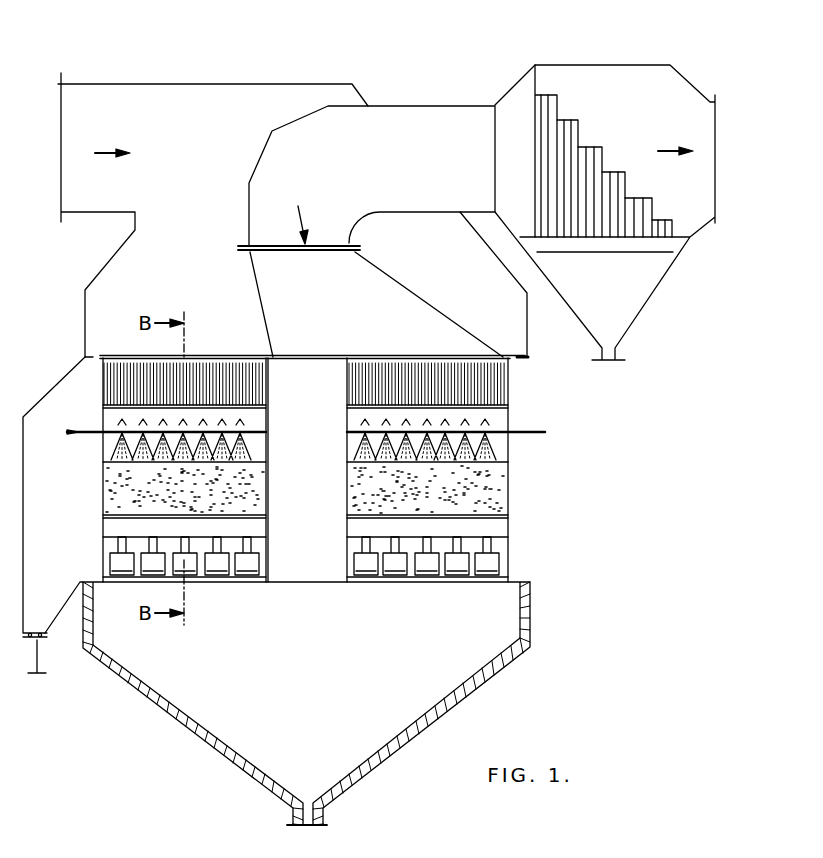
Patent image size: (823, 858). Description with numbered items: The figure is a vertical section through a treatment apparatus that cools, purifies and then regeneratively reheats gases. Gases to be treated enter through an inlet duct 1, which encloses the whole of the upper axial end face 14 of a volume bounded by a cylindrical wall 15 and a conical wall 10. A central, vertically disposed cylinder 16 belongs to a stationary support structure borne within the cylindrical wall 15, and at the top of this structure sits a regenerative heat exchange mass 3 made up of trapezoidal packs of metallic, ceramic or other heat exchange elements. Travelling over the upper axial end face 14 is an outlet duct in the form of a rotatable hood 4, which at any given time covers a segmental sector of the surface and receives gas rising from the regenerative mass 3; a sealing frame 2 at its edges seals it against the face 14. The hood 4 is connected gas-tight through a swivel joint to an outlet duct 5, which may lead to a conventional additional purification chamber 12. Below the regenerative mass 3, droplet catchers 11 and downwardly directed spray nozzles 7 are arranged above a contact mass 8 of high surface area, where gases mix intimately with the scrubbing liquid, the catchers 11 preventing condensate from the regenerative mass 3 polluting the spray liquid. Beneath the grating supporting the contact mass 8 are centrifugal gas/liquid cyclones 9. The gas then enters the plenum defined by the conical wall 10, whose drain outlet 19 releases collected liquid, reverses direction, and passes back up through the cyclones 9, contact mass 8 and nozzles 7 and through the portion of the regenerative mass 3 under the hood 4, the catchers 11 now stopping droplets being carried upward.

The inlet duct 1 is at (202, 137).
The outlet duct 5 is at (420, 145).
The rotatable hood 4 is at (393, 323).
The sealing frame 2 is at (505, 355).
The additional purification chamber 12 is at (576, 128).
The upper axial end face 14 is at (117, 355).
The regenerative heat exchange mass 3 is at (497, 380).
The droplet catchers 11 is at (487, 421).
The spray nozzles 7 is at (497, 447).
The contact mass 8 is at (493, 497).
The gas/liquid cyclones 9 is at (495, 560).
The central cylinder 16 is at (306, 530).
The cylindrical wall 15 is at (100, 468).
The conical wall 10 is at (528, 607).
The drain outlet 19 is at (320, 808).